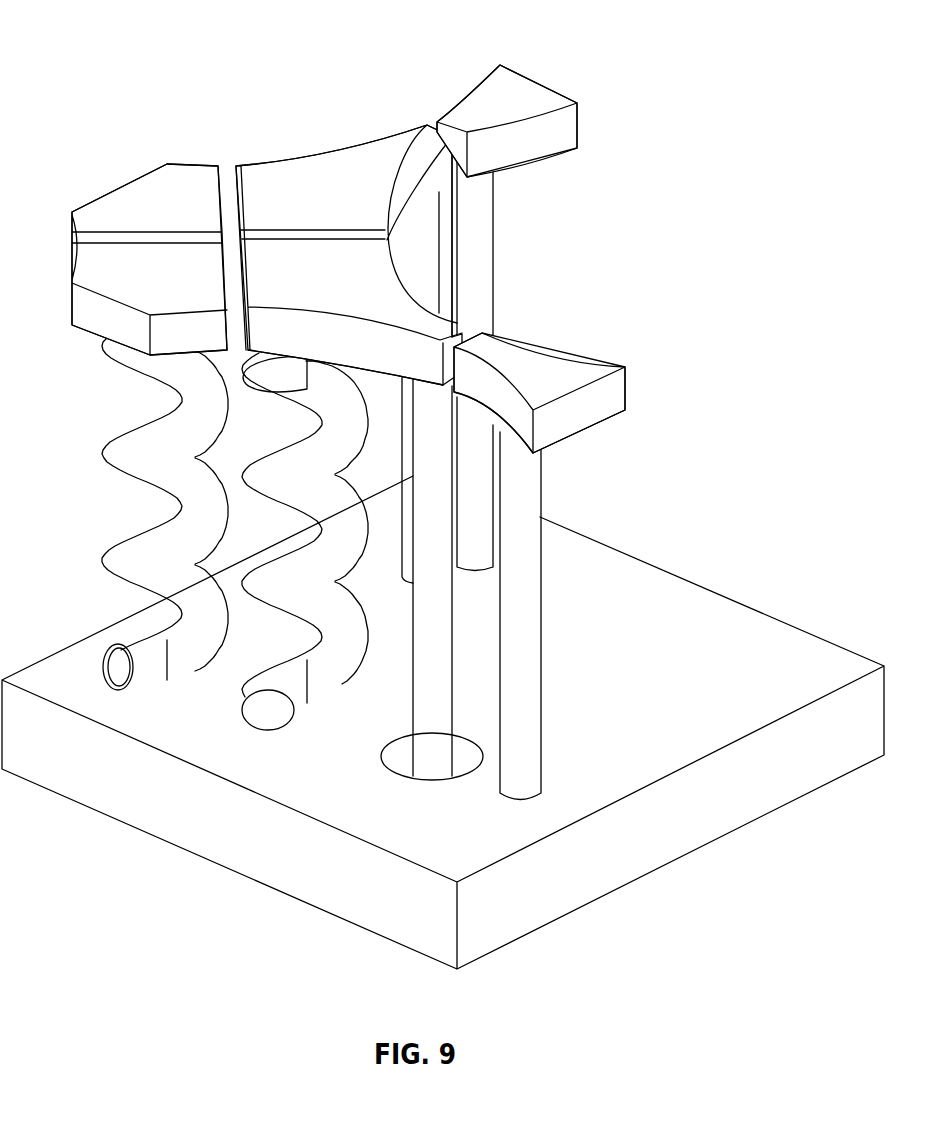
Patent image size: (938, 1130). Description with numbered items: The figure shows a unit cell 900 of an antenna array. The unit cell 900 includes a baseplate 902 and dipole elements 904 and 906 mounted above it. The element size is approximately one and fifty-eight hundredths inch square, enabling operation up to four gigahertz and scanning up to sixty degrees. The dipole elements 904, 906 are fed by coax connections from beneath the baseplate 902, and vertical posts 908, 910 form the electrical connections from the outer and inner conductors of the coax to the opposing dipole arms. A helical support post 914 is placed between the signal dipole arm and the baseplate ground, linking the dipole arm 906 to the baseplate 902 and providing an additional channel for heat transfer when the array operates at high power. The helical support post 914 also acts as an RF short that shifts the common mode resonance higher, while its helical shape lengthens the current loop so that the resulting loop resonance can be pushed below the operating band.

The unit cell 900 is at (97, 38).
The baseplate 902 is at (711, 606).
The dipole element 904 is at (602, 407).
The dipole element 906 is at (377, 277).
The vertical post 908 is at (522, 602).
The vertical post 910 is at (421, 696).
The helical support post 914 is at (323, 620).